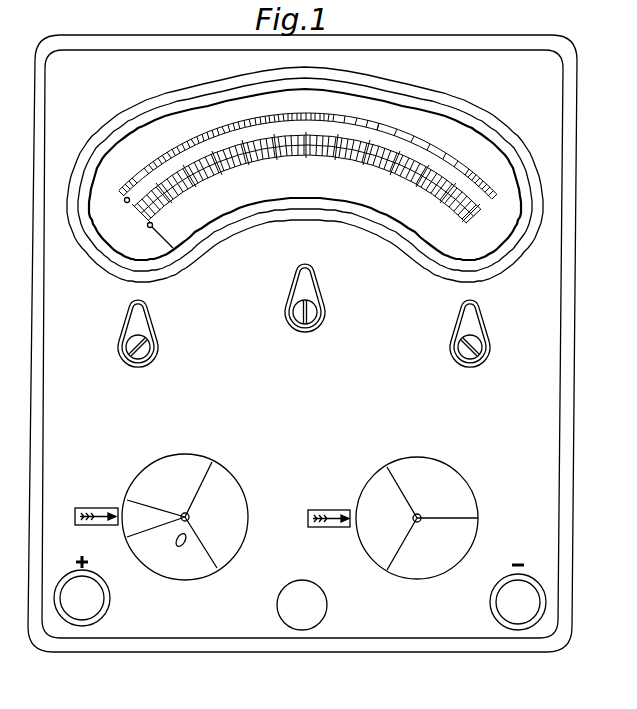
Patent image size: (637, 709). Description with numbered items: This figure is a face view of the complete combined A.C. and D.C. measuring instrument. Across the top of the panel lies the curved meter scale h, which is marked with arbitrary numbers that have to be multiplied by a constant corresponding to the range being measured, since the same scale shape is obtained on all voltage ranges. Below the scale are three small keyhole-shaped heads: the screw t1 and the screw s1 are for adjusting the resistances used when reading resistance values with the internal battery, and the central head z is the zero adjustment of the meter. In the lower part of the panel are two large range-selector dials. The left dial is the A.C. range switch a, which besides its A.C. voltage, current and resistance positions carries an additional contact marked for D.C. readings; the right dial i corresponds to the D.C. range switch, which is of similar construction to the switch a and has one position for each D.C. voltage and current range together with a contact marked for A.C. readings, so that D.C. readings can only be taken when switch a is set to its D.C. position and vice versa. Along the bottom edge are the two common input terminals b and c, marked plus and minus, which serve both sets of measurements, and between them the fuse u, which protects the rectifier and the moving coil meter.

The indicating instrument scale h is at (428, 128).
The adjusting screw t1 is at (141, 349).
The zero adjustment z is at (307, 327).
The adjusting screw s1 is at (468, 350).
The A. C. range switch a is at (192, 568).
The D.C. range selector dial i is at (440, 573).
The input terminal b is at (82, 607).
The fuse u is at (302, 617).
The input terminal c is at (522, 607).